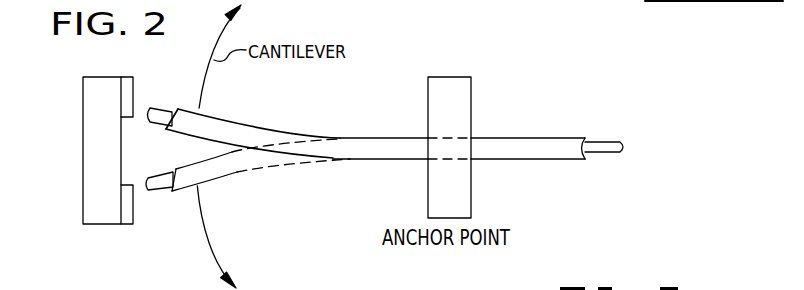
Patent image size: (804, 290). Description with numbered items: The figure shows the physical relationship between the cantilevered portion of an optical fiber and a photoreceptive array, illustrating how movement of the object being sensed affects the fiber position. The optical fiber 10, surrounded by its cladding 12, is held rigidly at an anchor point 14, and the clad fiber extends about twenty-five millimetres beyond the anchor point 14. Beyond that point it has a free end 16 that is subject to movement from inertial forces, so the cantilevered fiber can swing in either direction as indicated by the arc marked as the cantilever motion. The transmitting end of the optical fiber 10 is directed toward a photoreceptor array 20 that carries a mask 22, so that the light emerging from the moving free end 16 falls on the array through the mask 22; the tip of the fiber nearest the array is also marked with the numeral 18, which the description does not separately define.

The optical fiber 10 is at (608, 148).
The cladding 12 is at (370, 160).
The anchor point 14 is at (471, 113).
The free end 16 is at (245, 127).
The rod end pin 18 is at (160, 110).
The photoreceptor array 20 is at (100, 225).
The mask 22 is at (128, 225).